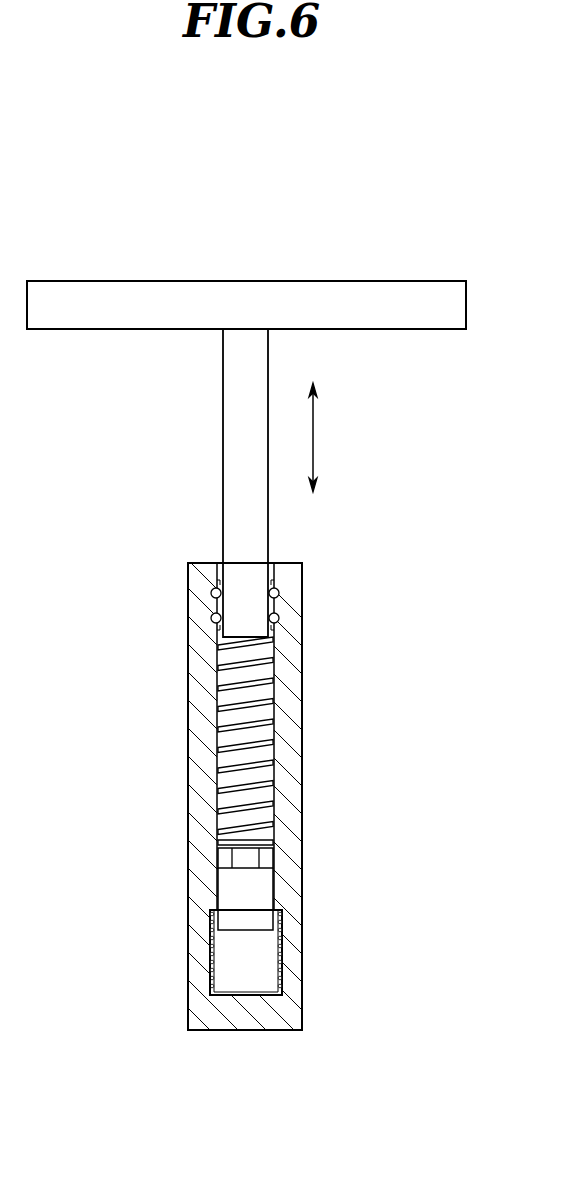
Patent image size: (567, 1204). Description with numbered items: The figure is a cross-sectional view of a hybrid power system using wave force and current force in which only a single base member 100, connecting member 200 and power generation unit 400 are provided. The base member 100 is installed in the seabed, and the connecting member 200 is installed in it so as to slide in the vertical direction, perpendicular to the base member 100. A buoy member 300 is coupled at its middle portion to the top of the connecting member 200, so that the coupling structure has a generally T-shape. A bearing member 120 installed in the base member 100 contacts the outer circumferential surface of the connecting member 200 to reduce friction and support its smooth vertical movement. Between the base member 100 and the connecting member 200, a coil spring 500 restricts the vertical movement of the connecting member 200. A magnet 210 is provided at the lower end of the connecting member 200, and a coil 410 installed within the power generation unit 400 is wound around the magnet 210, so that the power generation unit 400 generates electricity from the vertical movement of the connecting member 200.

The buoy member 300 is at (396, 280).
The connecting member 200 is at (222, 450).
The base member 100 is at (188, 793).
The bearing member 120 is at (211, 593).
The coil spring 500 is at (240, 710).
The magnet 210 is at (268, 893).
The power generation unit 400 is at (208, 942).
The coil 410 is at (210, 982).